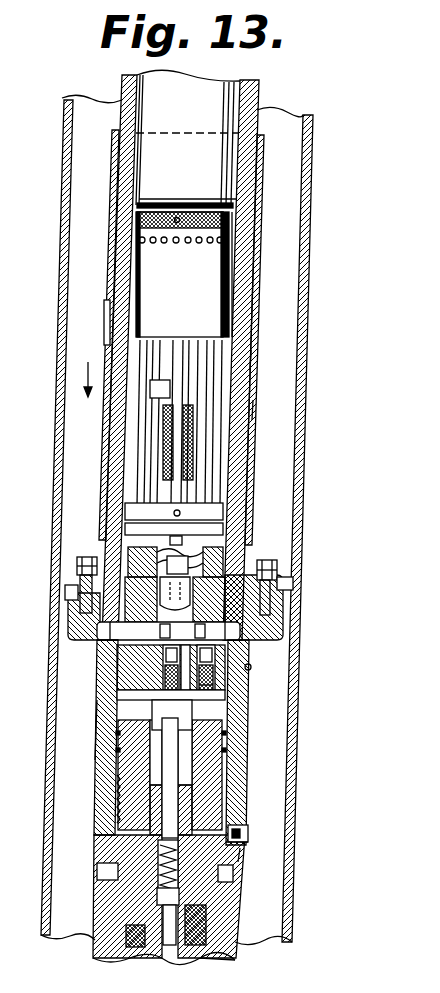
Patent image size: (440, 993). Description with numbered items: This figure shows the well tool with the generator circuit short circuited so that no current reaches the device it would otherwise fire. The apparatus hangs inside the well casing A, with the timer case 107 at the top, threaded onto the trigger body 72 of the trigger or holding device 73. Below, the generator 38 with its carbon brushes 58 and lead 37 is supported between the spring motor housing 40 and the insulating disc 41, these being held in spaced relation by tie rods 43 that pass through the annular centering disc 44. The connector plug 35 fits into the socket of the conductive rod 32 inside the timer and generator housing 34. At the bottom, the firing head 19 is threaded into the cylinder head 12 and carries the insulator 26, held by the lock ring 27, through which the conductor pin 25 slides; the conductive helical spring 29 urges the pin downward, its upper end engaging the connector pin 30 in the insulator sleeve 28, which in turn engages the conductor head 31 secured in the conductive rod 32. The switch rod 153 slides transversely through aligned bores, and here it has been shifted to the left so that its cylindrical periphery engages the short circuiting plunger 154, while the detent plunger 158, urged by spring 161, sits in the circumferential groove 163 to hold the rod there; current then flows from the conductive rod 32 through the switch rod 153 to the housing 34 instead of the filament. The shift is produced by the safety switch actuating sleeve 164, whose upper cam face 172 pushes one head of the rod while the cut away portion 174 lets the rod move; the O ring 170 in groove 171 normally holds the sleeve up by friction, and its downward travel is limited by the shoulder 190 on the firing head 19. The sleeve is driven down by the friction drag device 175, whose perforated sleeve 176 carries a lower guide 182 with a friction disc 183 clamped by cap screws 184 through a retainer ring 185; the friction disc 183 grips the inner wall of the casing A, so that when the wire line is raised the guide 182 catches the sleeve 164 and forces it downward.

The well casing A is at (313, 136).
The cylinder head 12 is at (5, 305).
The timer case 107 is at (218, 104).
The friction drag device 175 is at (268, 307).
The perforated sleeve 176 is at (253, 356).
The timer and generator housing 34 is at (263, 410).
The trigger or holding device 73 is at (230, 208).
The trigger body 72 is at (137, 217).
The spring motor housing 40 is at (222, 271).
The tie rods 43 is at (222, 381).
The carbon brushes 58 is at (150, 393).
The generator 38 is at (146, 430).
The lead 37 is at (146, 451).
The centering disc 44 is at (208, 515).
The insulating disc 41 is at (225, 535).
The connector plug 35 is at (208, 560).
The conductive rod 32 is at (230, 594).
The lower guide 182 is at (70, 617).
The cap screws 184 is at (54, 557).
The retainer ring 185 is at (78, 580).
The friction disc 183 is at (66, 591).
The circumferential groove 163 is at (225, 615).
The switch rod 153 is at (97, 630).
The insulator sleeve 28 is at (152, 800).
The cut away portion 174 is at (100, 648).
The safety switch actuating sleeve 164 is at (98, 731).
The short circuiting plunger 154 is at (166, 660).
The detent plunger 158 is at (215, 652).
The cam face 172 is at (252, 667).
The spring 161 is at (207, 684).
The conductor head 31 is at (186, 719).
The connector pin 30 is at (171, 746).
The groove 171 is at (242, 829).
The O ring 170 is at (246, 838).
The shoulder 190 is at (240, 848).
The conductive helical spring 29 is at (160, 866).
The conductor pin 25 is at (172, 896).
The insulator 26 is at (195, 916).
The lock ring 27 is at (130, 935).
The firing head 19 is at (237, 957).